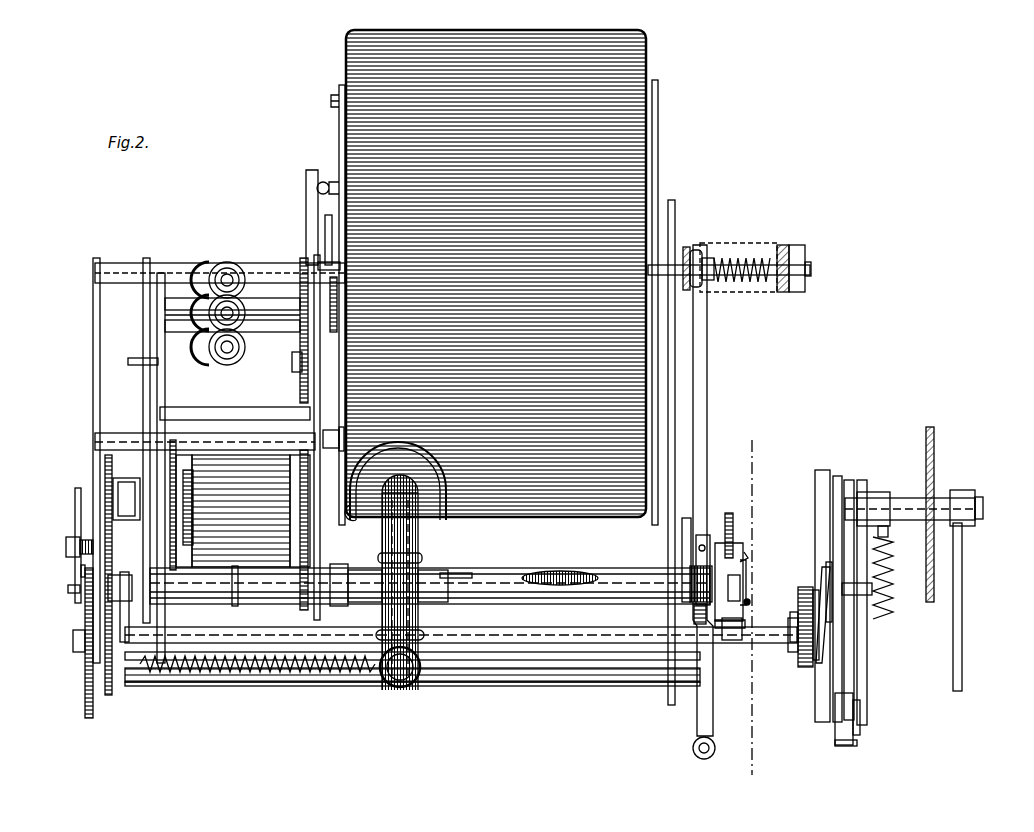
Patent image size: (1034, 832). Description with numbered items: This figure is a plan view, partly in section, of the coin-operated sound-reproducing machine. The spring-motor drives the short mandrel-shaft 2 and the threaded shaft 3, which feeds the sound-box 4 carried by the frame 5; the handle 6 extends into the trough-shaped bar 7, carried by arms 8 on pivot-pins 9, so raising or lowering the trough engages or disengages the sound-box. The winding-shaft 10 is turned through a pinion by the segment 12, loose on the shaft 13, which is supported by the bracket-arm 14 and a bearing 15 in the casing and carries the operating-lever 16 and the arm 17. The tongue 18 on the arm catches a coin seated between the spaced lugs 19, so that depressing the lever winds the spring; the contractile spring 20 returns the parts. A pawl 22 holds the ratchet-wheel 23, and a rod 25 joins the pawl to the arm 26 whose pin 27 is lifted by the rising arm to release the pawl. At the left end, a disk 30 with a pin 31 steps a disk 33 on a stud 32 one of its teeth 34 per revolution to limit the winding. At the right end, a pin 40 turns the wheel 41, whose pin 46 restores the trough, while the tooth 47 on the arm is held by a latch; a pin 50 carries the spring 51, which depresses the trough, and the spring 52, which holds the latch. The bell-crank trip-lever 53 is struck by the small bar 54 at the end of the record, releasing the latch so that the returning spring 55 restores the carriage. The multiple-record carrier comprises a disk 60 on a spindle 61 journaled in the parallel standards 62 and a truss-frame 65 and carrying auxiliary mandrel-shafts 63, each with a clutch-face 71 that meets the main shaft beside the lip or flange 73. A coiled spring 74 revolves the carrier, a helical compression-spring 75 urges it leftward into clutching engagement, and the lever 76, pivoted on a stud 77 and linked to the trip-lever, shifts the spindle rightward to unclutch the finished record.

The mandrel-shaft 2 is at (330, 430).
The threaded shaft 3 is at (566, 572).
The sound-box 4 is at (420, 516).
The frame 5 is at (380, 606).
The handle 6 is at (390, 686).
The trough-shaped bar 7 is at (495, 678).
The arms 8 is at (130, 628).
The pivot-pins 9 is at (118, 575).
The winding-shaft 10 is at (614, 640).
The segment 12 is at (835, 698).
The shaft 13 is at (983, 510).
The bracket-arm 14 is at (824, 470).
The bearing 15 is at (936, 490).
The operating-lever 16 is at (963, 590).
The arm 17 is at (868, 690).
The overhanging tongue 18 is at (860, 712).
The spaced lugs 19 is at (852, 742).
The contractile spring 20 is at (890, 570).
The pawl 22 is at (805, 672).
The ratchet-wheel 23 is at (795, 650).
The rod 25 is at (822, 590).
The arm 26 is at (826, 548).
The laterally-projecting pin 27 is at (880, 612).
The disk 30 is at (85, 696).
The pin 31 is at (70, 590).
The stud 32 is at (66, 548).
The disk 33 is at (75, 560).
The teeth 34 is at (80, 573).
The pin or tooth 40 is at (730, 640).
The wheel 41 is at (736, 522).
The pin 46 is at (740, 546).
The projecting tooth 47 is at (745, 560).
The pin 50 is at (694, 610).
The spring 51 is at (700, 628).
The spring 52 is at (750, 602).
The bell-crank trip-lever 53 is at (698, 548).
The small bar 54 is at (468, 573).
The returning spring 55 is at (280, 670).
The disk 60 is at (658, 126).
The spindle 61 is at (808, 255).
The parallel standards 62 is at (688, 247).
The auxiliary mandrel-shafts 63 is at (658, 96).
The truss-frame 65 is at (326, 245).
The clutch-face 71 is at (331, 101).
The lip or flange 73 is at (331, 449).
The coiled spring 74 is at (674, 205).
The helical compression-spring 75 is at (748, 258).
The lever 76 is at (708, 346).
The stud 77 is at (696, 755).